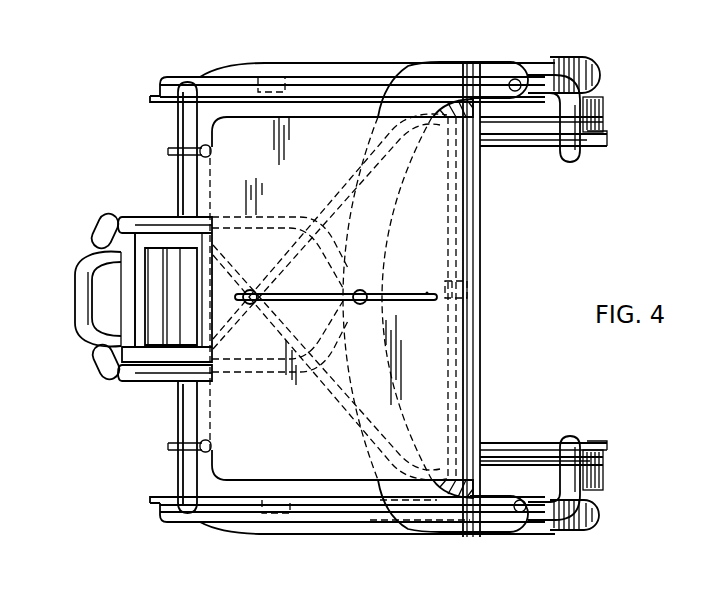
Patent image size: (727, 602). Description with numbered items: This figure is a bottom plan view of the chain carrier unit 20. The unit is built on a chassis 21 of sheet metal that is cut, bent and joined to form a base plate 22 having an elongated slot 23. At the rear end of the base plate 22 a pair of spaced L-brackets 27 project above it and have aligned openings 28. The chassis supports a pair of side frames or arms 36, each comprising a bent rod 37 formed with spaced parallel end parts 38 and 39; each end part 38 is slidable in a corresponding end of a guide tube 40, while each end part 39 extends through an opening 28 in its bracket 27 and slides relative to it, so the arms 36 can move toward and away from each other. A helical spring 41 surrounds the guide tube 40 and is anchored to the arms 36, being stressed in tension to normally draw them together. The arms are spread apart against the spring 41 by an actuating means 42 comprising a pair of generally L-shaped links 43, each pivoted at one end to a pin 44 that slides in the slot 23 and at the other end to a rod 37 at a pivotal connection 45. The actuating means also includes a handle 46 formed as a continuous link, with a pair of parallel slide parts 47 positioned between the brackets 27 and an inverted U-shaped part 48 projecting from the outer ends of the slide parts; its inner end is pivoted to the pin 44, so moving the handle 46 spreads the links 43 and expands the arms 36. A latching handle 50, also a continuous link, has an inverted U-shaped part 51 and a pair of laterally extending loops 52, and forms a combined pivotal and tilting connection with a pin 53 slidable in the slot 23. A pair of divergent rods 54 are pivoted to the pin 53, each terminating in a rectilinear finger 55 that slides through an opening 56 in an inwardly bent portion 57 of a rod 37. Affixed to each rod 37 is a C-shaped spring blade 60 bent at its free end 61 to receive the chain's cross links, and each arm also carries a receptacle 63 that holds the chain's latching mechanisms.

The chain carrier unit 20 is at (173, 124).
The chassis 21 is at (490, 299).
The base plate 22 is at (463, 336).
The elongated slot 23 is at (427, 292).
The L-brackets 27 is at (211, 150).
The aligned openings 28 is at (167, 155).
The side frames or arms 36 is at (270, 77).
The rod 37 is at (340, 84).
The arm end part 38 is at (473, 290).
The arm end part 39 is at (178, 196).
The guide tube 40 is at (448, 330).
The helical spring 41 is at (478, 484).
The actuating means 42 is at (405, 520).
The L-shaped links 43 is at (437, 67).
The pin 44 is at (360, 290).
The pivotal connection 45 is at (522, 512).
The handle 46 is at (125, 281).
The slide parts 47 is at (259, 216).
The inverted U-shaped part 48 is at (138, 300).
The latching handle 50 is at (79, 214).
The inverted U-shaped part 51 is at (77, 303).
The laterally extending loops 52 is at (108, 213).
The pin 53 is at (254, 304).
The divergent rods 54 is at (352, 185).
The rectilinear finger 55 is at (529, 131).
The openings 56 is at (600, 108).
The inwardly bent portions 57 is at (572, 157).
The C-shaped spring blade 60 is at (370, 64).
The free end 61 is at (580, 60).
The receptacle 63 is at (600, 98).